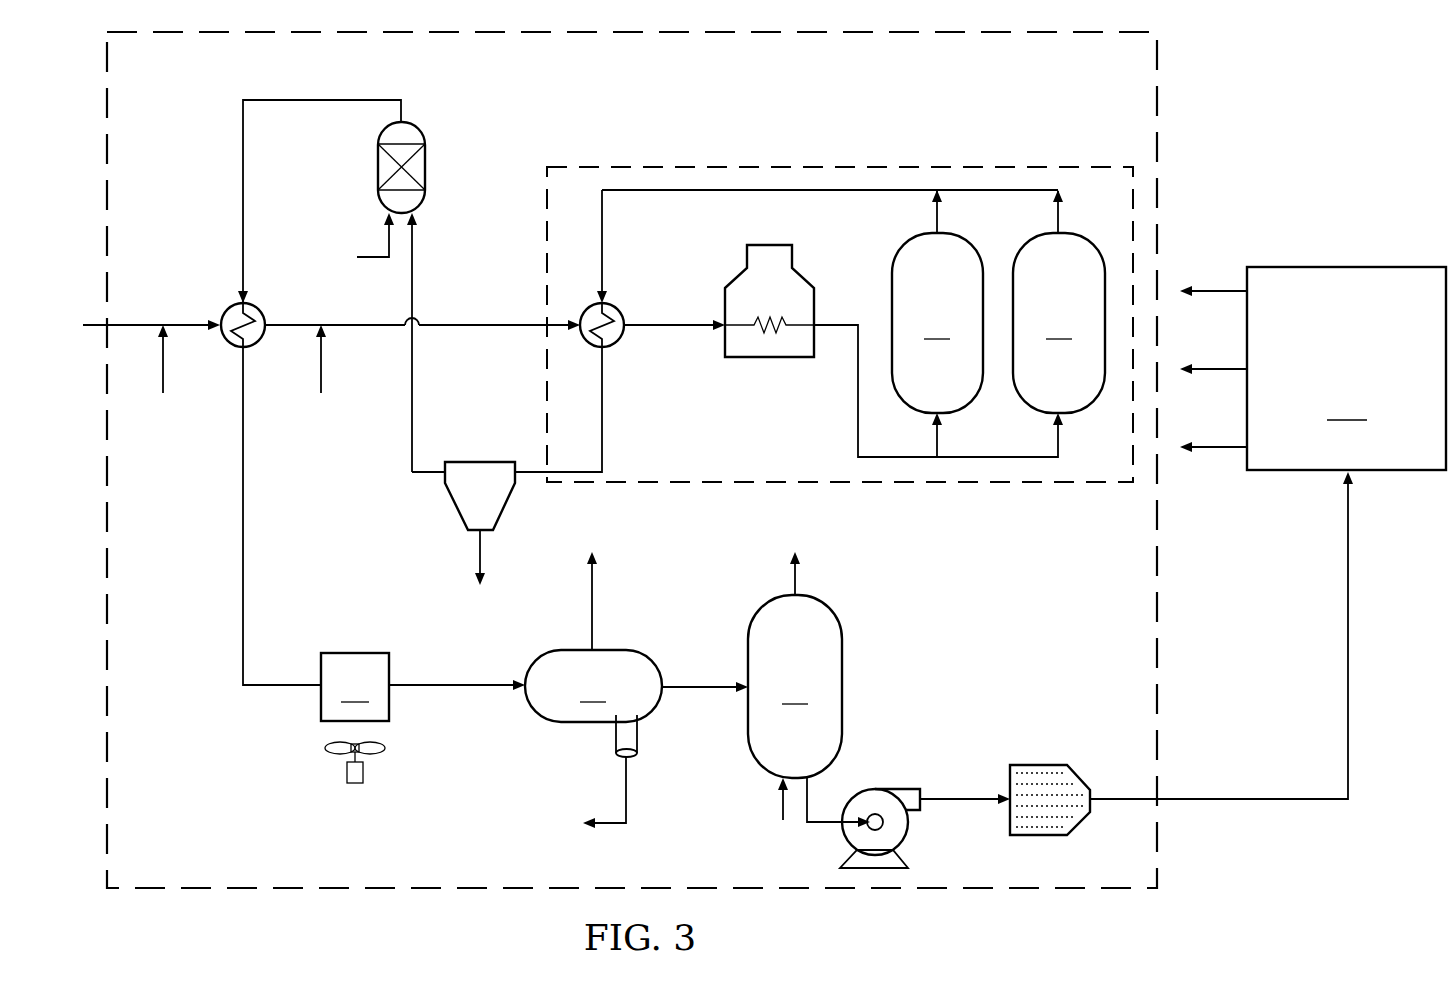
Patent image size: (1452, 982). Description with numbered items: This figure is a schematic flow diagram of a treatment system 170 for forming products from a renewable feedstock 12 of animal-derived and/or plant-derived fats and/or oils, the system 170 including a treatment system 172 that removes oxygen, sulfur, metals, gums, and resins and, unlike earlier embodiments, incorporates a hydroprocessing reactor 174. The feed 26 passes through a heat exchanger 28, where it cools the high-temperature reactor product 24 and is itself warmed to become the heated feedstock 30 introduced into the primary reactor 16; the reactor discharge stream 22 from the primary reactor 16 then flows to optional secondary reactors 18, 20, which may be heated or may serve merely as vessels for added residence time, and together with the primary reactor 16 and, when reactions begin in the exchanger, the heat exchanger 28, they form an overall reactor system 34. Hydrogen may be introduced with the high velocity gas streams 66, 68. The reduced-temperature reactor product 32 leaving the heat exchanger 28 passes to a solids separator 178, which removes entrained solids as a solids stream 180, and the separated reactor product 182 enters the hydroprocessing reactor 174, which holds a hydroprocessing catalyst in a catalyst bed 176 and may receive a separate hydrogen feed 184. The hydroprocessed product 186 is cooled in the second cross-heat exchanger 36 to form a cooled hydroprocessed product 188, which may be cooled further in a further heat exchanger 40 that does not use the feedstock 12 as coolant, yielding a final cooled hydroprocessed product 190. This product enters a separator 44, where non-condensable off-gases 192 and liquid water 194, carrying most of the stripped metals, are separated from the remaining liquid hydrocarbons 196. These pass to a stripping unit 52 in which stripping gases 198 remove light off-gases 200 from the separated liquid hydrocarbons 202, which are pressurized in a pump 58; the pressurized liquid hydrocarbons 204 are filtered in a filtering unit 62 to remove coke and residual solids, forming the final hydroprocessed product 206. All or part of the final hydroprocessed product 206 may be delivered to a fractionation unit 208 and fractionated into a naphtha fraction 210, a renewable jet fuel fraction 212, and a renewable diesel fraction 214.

The feedstock 12 is at (145, 322).
The primary reactor 16 is at (725, 335).
The secondary reactor 18 is at (937, 323).
The secondary reactor 20 is at (1059, 323).
The reactor discharge stream 22 is at (858, 388).
The high-temperature reactor product 24 is at (838, 192).
The feed 26 is at (298, 322).
The heat exchanger 28 is at (590, 305).
The heated feedstock 30 is at (667, 322).
The reduced-temperature reactor product 32 is at (604, 402).
The overall reactor system 34 is at (988, 493).
The second cross-heat exchanger 36 is at (232, 305).
The further heat exchanger 40 is at (355, 718).
The separator 44 is at (593, 703).
The stripping unit 52 is at (795, 686).
The pump 58 is at (908, 830).
The filtering unit 62 is at (1040, 764).
The high velocity gas stream 66 is at (165, 366).
The high velocity gas stream 68 is at (319, 366).
The treatment system 170 is at (1310, 81).
The treatment system 172 is at (1162, 160).
The hydroprocessing reactor 174 is at (378, 166).
The catalyst bed 176 is at (415, 166).
The solids separator 178 is at (448, 505).
The solids stream 180 is at (478, 552).
The separated reactor product 182 is at (410, 385).
The hydrogen feed 184 is at (370, 259).
The hydroprocessed product 186 is at (320, 98).
The cooled hydroprocessed product 188 is at (282, 688).
The final cooled hydroprocessed product 190 is at (479, 690).
The non-condensable off-gases 192 is at (596, 600).
The liquid water 194 is at (628, 790).
The remaining liquid hydrocarbons 196 is at (705, 690).
The stripping gases 198 is at (782, 807).
The light off-gases 200 is at (800, 574).
The separated liquid hydrocarbons 202 is at (838, 838).
The pressurized liquid hydrocarbons 204 is at (966, 797).
The final hydroprocessed product 206 is at (1350, 636).
The fractionation unit 208 is at (1346, 368).
The naphtha fraction 210 is at (1212, 290).
The renewable jet fuel fraction 212 is at (1212, 368).
The renewable diesel fraction 214 is at (1212, 446).